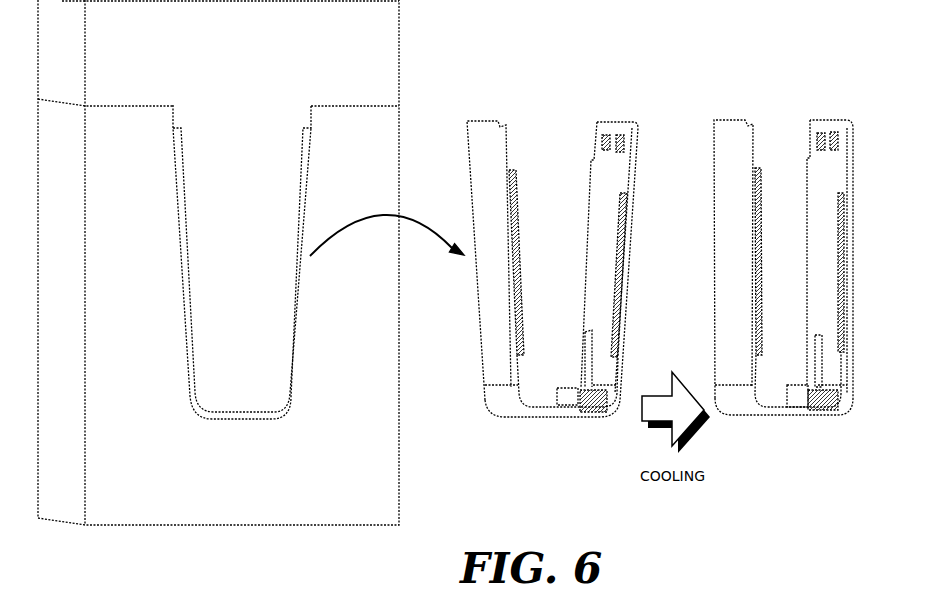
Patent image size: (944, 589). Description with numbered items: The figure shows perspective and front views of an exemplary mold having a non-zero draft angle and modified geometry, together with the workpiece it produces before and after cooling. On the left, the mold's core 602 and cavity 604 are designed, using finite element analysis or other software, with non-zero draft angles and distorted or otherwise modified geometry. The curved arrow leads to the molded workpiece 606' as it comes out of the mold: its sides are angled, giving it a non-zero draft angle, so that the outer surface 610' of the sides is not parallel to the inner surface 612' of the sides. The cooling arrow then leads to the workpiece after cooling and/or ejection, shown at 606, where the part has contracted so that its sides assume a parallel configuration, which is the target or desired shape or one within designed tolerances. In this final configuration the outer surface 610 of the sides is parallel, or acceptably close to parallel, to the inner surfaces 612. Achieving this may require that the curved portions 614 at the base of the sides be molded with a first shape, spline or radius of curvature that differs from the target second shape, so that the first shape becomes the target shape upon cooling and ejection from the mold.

The core 602 is at (383, 57).
The cavity 604 is at (383, 362).
The molded workpiece 606' is at (561, 240).
The outer surface 610' is at (471, 260).
The inner surface 612' is at (614, 123).
The curved portions 614 is at (505, 398).
The workpiece in target shape 606 is at (784, 242).
The outer surface 610 is at (718, 259).
The inner surfaces 612 is at (830, 118).